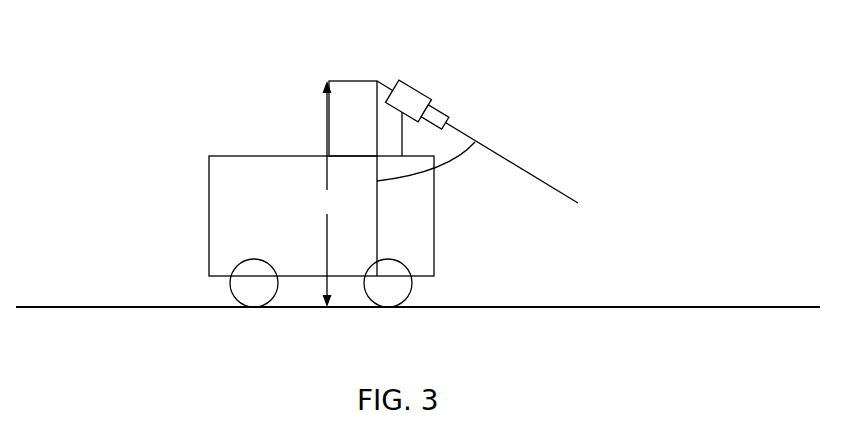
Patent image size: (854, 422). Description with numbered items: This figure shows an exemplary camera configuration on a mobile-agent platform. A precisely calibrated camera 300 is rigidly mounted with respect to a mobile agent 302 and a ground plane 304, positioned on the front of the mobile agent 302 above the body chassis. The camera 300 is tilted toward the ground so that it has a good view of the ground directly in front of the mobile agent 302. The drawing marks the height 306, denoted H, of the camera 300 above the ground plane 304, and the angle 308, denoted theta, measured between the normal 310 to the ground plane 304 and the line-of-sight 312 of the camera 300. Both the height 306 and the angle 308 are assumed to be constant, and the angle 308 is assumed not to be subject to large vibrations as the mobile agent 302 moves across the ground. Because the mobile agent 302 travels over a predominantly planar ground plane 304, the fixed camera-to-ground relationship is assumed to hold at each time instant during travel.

The camera 300 is at (425, 70).
The mobile agent 302 is at (226, 148).
The ground plane 304 is at (503, 313).
The height 306 is at (327, 145).
The angle 308 is at (462, 156).
The normal 310 is at (388, 236).
The line-of-sight 312 is at (562, 174).